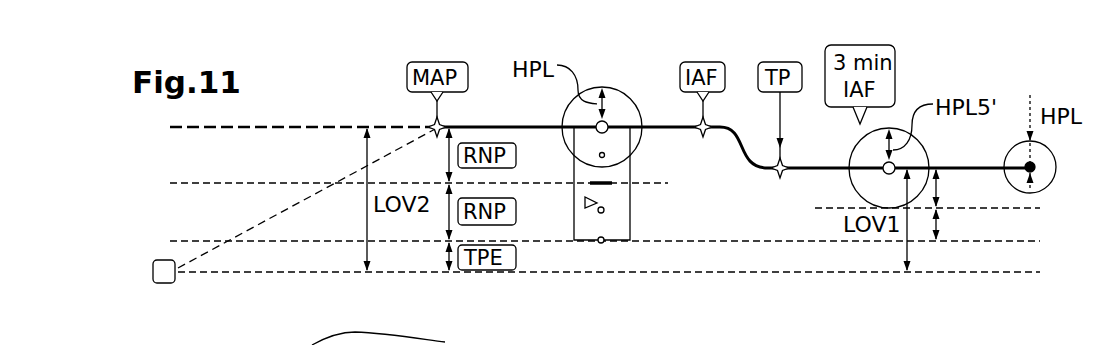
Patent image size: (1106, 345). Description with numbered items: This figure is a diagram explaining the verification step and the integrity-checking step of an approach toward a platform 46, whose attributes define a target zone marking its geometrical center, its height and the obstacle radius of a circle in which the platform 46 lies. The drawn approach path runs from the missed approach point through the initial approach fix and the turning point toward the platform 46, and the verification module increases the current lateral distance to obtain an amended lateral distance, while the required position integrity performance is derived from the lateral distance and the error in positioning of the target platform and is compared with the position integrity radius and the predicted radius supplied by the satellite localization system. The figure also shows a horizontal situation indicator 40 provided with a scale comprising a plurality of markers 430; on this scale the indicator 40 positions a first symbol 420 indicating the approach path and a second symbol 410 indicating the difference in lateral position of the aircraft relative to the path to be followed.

The horizontal situation indicator 40 is at (600, 258).
The platform 46 is at (165, 283).
The second symbol 410 is at (574, 207).
The first symbol 420 is at (603, 186).
The markers 430 is at (605, 209).